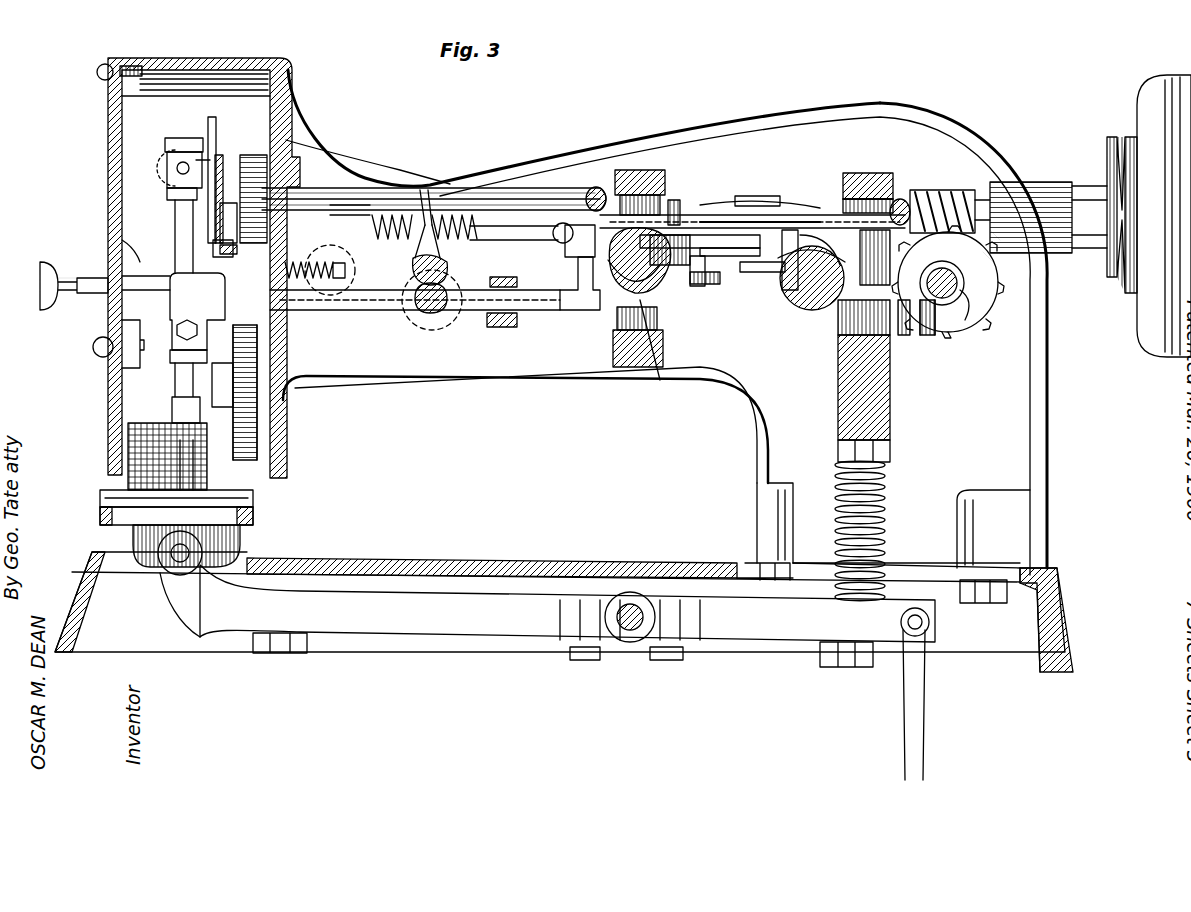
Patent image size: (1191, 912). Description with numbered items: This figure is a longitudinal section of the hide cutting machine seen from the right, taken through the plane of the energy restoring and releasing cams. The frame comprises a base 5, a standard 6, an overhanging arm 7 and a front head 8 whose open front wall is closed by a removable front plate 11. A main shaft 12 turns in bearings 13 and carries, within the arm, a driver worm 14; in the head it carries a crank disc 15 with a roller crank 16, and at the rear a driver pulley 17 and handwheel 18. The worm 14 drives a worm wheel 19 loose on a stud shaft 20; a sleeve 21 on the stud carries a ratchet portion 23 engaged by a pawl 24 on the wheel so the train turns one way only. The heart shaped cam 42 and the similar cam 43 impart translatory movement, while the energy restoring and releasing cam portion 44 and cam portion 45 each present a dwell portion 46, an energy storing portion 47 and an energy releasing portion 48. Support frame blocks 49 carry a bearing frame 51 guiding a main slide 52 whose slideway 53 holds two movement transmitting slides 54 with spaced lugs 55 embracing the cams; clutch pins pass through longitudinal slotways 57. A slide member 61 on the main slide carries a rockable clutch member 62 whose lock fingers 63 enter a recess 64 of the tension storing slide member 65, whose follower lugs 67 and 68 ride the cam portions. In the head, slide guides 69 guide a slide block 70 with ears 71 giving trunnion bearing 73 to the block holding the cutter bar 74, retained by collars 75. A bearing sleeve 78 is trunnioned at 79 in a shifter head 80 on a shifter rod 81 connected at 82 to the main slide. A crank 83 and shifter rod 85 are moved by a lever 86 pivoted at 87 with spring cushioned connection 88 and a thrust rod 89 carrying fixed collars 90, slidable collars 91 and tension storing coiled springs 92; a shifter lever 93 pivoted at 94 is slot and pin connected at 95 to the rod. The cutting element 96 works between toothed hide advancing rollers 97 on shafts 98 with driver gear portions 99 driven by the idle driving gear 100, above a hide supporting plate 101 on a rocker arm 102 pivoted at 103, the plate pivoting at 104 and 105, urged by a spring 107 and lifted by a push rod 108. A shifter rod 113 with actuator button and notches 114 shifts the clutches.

The base 5 is at (676, 566).
The standard 6 is at (1030, 381).
The overhanging arm 7 is at (650, 140).
The front head 8 is at (299, 118).
The removable front plate 11 is at (112, 160).
The main shaft 12 is at (455, 186).
The bearings 13 is at (360, 172).
The driver worm 14 is at (960, 186).
The crank disc 15 is at (300, 143).
The roller crank 16 is at (220, 214).
The driver pulley 17 is at (1120, 188).
The handwheel 18 is at (1164, 216).
The worm wheel 19 is at (958, 330).
The stud shaft 20 is at (928, 340).
The sleeve 21 is at (968, 310).
The ratchet portion 23 is at (986, 268).
The pawl 24 is at (985, 243).
The heart shaped cam 42 is at (167, 166).
The cam 43 is at (660, 300).
The energy restoring and releasing cam portion 44 is at (825, 300).
The cam portion 45 is at (676, 198).
The dwell portion 46 is at (612, 345).
The energy storing portion 47 is at (690, 210).
The energy releasing portion 48 is at (640, 182).
The support frame blocks 49 is at (892, 398).
The bearing frame 51 is at (745, 192).
The main slide 52 is at (712, 290).
The slideway 53 is at (755, 282).
The movement transmitting slides 54 is at (702, 290).
The spaced lugs 55 is at (903, 336).
The longitudinal slotways 57 is at (790, 292).
The slide member 61 is at (740, 233).
The rockable clutch member 62 is at (752, 205).
The lock fingers 63 is at (710, 218).
The slot or recess 64 is at (692, 262).
The tension storing and releasing slide member 65 is at (590, 200).
The follower lug 67 is at (940, 265).
The follower lug 68 is at (592, 312).
The slide guide 69 is at (208, 120).
The slide block 70 is at (222, 156).
The ears 71 is at (180, 170).
The trunnion bearing 73 is at (183, 138).
The cutter bar 74 is at (175, 238).
The collars 75 is at (167, 142).
The bearing sleeve 78 is at (132, 320).
The trunnion bearing 79 is at (170, 358).
The shifter head 80 is at (197, 311).
The shifter rod 81 is at (490, 326).
The connection 82 is at (570, 312).
The crank 83 is at (122, 242).
The shifter rod 85 is at (238, 255).
The lever 86 is at (305, 282).
The pivot 87 is at (415, 297).
The spring cushioned connection 88 is at (325, 282).
The thrust rod 89 is at (526, 234).
The fixed collars 90 is at (364, 186).
The slidable collars 91 is at (422, 188).
The tension storing coiled spring 92 is at (400, 238).
The shifter lever 93 is at (412, 262).
The pivot 94 is at (445, 331).
The slot and pin connection 95 is at (425, 316).
The cutting element 96 is at (255, 498).
The toothed hide advancing roller 97 is at (128, 482).
The shaft 98 is at (128, 460).
The driver gear portion 99 is at (270, 448).
The idle driving gear 100 is at (270, 412).
The hide supporting plate 101 is at (255, 518).
The rocker arm 102 is at (547, 603).
The pivot 103 is at (633, 630).
The pivot 104 is at (110, 524).
The pivot 105 is at (192, 549).
The spring 107 is at (888, 500).
The push rod 108 is at (926, 663).
The shifter rod 113 is at (505, 290).
The actuator button and notches 114 is at (108, 276).